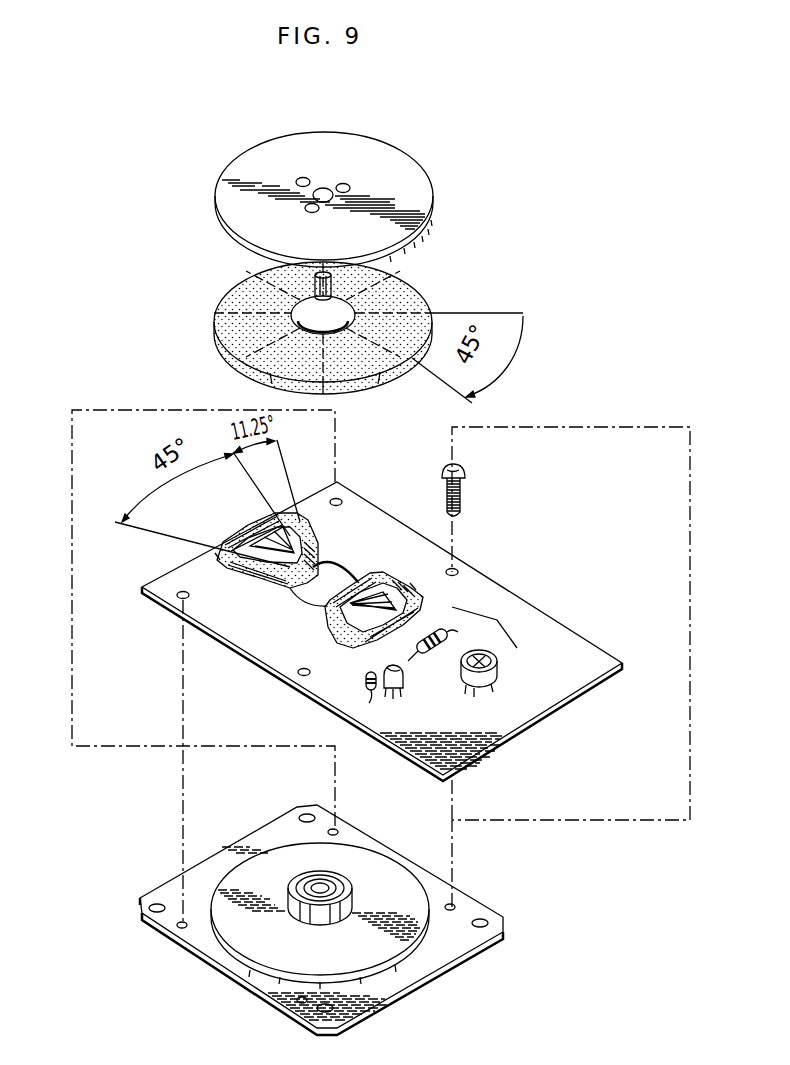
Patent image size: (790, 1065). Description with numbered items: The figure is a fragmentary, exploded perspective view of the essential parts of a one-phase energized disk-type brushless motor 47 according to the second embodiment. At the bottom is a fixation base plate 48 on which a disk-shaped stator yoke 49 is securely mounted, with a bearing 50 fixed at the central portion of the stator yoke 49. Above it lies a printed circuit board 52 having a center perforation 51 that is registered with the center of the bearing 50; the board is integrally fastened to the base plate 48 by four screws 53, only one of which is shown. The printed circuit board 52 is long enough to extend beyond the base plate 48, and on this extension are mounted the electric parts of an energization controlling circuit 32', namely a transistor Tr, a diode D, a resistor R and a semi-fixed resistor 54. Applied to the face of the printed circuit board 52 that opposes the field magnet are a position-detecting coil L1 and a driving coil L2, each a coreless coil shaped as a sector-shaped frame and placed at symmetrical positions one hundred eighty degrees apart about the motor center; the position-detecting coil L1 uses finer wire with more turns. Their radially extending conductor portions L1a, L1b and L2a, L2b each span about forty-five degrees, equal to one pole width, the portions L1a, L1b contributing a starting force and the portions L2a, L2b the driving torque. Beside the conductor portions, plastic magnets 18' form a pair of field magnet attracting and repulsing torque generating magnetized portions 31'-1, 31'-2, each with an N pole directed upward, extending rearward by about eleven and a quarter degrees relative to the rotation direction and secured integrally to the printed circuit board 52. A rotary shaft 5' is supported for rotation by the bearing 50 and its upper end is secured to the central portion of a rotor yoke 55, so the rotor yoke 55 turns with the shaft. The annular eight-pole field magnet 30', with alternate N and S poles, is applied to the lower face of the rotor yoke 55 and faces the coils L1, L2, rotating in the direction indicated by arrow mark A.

The rotor yoke 55 is at (388, 163).
The disk-type brushless motor 47 is at (474, 238).
The rotary shaft 5' is at (397, 277).
The field magnet 30' is at (372, 328).
The arrow mark A is at (183, 305).
The printed circuit board 52 is at (550, 687).
The driving coil L2 is at (247, 582).
The radially extending conductor portion L2a is at (213, 573).
The radially extending conductor portion L2b is at (290, 512).
The field magnet attracting and repulsing torque generating magnetized portion 31'-1 is at (330, 494).
The center perforation 51 is at (313, 590).
The position-detecting coil L1 is at (333, 655).
The radially extending conductor portion L1a is at (395, 552).
The radially extending conductor portion L1b is at (325, 613).
The field magnet attracting and repulsing torque generating magnetized portion 31'-2 is at (314, 668).
The plastic magnet 18' is at (332, 554).
The screw 53 is at (465, 482).
The resistor R is at (434, 632).
The energization controlling circuit 32' is at (536, 609).
The diode D is at (368, 692).
The transistor Tr is at (403, 688).
The semi-fixed resistor 54 is at (493, 683).
The fixation base plate 48 is at (442, 948).
The stator yoke 49 is at (383, 888).
The bearing 50 is at (327, 888).